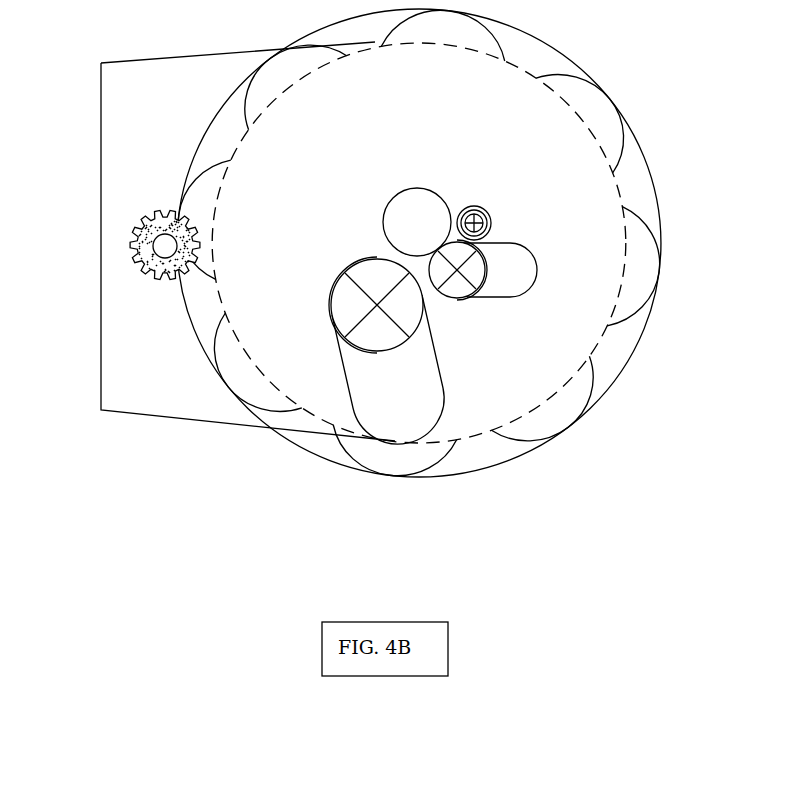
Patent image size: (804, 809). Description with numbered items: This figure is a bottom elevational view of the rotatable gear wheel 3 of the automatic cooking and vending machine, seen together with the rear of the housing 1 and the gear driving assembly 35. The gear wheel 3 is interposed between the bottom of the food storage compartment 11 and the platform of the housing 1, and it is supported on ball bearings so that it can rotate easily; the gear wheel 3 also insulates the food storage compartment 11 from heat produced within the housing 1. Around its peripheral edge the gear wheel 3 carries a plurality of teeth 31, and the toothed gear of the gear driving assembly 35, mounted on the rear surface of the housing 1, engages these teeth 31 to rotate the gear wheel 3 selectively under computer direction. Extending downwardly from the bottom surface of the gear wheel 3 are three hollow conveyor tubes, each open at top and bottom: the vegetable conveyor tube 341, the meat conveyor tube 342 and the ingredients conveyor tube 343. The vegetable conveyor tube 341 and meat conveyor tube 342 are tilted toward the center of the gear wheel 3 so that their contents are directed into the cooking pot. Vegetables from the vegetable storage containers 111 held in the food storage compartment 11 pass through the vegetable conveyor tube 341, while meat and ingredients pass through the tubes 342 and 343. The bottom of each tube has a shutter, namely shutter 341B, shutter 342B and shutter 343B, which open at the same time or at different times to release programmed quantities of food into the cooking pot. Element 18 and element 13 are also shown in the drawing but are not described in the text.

The housing 1 is at (168, 76).
The housing 18 is at (100, 173).
The gear driving assembly 35 is at (137, 263).
The food storage compartment 11 is at (419, 243).
The teeth 31 is at (419, 243).
The rotatable gear wheel 3 is at (418, 242).
The vegetable storage containers 111 is at (579, 124).
The shaft 13 is at (388, 230).
The ingredients conveyor tube 343 is at (493, 228).
The shutter 343B is at (478, 214).
The meat conveyor tube 342 is at (517, 262).
The shutter 342B is at (457, 291).
The vegetable conveyor tube 341 is at (373, 388).
The shutter 341B is at (357, 297).